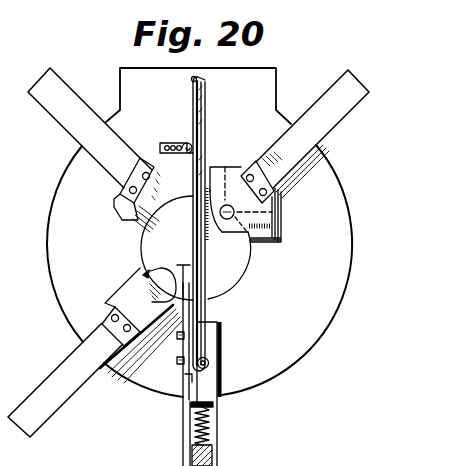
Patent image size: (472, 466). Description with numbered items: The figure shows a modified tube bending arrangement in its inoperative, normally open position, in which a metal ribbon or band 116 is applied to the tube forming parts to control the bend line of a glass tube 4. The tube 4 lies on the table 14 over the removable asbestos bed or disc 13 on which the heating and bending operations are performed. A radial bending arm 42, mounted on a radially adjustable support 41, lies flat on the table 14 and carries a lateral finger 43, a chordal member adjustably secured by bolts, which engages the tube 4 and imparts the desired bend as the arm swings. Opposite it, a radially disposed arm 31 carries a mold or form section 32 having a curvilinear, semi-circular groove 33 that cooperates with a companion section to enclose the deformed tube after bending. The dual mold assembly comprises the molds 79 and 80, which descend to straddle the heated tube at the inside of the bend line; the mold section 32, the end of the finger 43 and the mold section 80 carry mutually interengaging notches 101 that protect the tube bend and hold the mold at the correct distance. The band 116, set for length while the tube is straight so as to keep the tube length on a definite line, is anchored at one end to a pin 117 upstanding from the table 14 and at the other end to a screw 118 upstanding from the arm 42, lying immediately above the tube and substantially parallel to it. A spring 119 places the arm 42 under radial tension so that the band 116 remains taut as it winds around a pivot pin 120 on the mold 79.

The glass tube 4 is at (191, 80).
The mold section 80 is at (157, 164).
The pin 117 is at (196, 147).
The mold 79 is at (235, 172).
The band 116 is at (193, 236).
The pivot pin 120 is at (233, 225).
The bed or disc 13 is at (241, 267).
The table 14 is at (345, 248).
The notches 101 is at (176, 292).
The mold or form section 32 is at (110, 304).
The groove 33 is at (145, 306).
The radially disposed arm 31 is at (58, 367).
The lateral finger 43 is at (186, 375).
The arm 42 is at (209, 333).
The screw 118 is at (211, 364).
The spring 119 is at (211, 418).
The radially adjustable support 41 is at (215, 450).